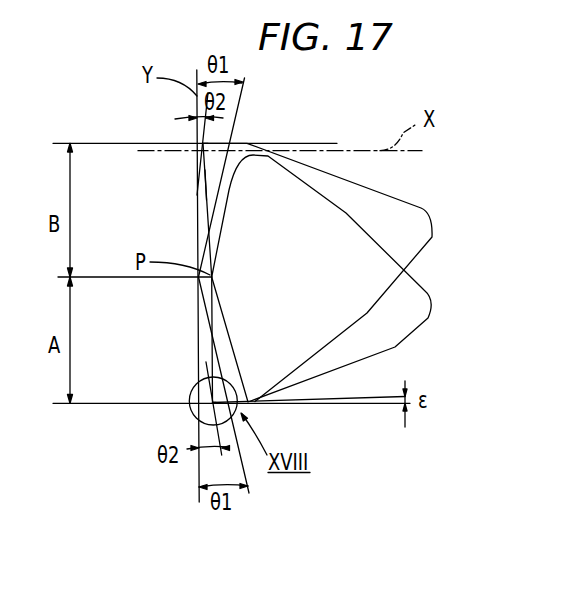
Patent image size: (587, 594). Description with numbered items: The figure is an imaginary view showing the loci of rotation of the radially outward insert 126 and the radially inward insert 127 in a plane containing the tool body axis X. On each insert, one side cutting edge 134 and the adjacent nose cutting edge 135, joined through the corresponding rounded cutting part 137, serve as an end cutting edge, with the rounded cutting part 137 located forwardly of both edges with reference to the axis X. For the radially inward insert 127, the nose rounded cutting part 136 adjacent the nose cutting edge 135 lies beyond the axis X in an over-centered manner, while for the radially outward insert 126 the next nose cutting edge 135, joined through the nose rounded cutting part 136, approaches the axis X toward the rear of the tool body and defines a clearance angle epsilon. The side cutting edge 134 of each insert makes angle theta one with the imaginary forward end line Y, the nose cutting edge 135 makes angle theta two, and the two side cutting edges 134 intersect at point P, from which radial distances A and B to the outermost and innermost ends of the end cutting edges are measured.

The radially outward insert 126 is at (424, 328).
The radially inward insert 127 is at (418, 208).
The side cutting edge 134 is at (204, 243).
The nose cutting edge 135 is at (201, 164).
The nose rounded cutting part 136 is at (200, 144).
The rounded cutting part 137 is at (197, 193).